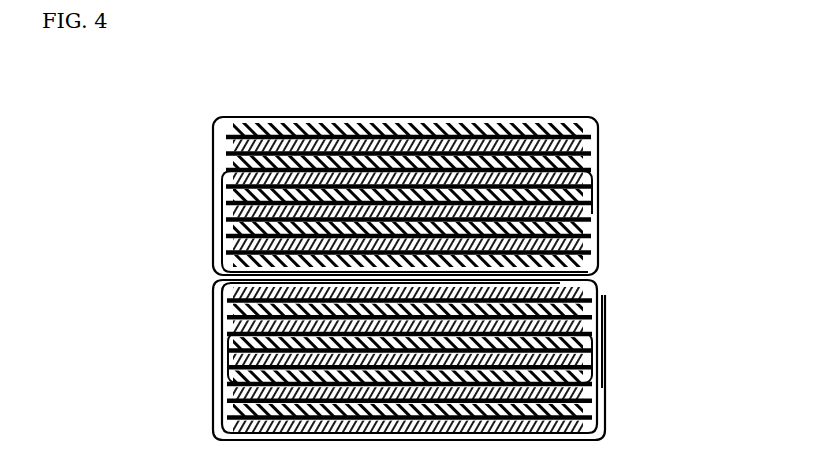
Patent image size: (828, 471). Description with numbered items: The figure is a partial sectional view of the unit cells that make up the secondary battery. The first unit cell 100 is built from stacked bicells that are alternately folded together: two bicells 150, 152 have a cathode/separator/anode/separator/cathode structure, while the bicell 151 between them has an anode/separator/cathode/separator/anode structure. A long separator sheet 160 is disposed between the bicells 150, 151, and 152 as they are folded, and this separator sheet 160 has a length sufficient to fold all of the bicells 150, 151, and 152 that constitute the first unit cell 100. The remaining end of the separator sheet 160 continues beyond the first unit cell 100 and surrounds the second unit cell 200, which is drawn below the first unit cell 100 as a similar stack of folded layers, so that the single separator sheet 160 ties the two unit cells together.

The first unit cell 100 is at (170, 195).
The bicell 150 is at (588, 126).
The bicell 151 is at (586, 190).
The bicell 152 is at (585, 247).
The separator sheet 160 is at (213, 142).
The second unit cell 200 is at (170, 343).